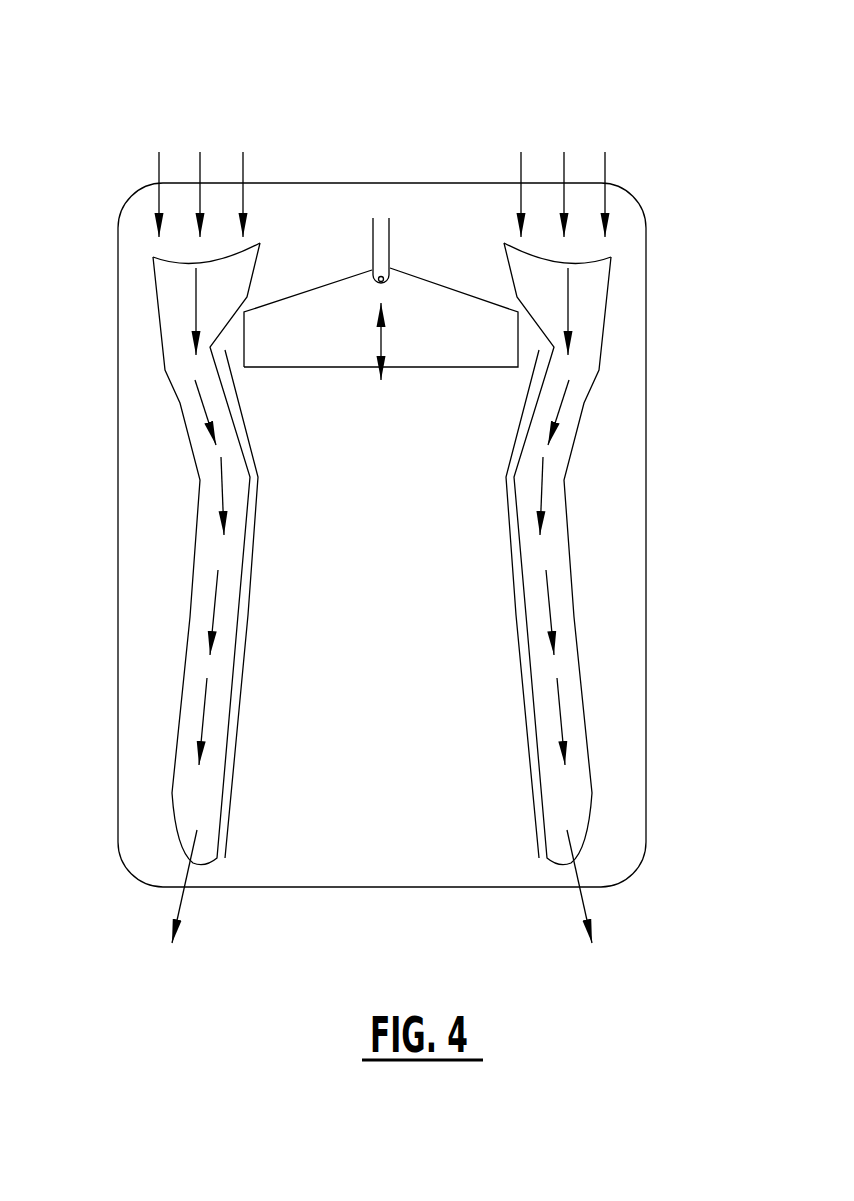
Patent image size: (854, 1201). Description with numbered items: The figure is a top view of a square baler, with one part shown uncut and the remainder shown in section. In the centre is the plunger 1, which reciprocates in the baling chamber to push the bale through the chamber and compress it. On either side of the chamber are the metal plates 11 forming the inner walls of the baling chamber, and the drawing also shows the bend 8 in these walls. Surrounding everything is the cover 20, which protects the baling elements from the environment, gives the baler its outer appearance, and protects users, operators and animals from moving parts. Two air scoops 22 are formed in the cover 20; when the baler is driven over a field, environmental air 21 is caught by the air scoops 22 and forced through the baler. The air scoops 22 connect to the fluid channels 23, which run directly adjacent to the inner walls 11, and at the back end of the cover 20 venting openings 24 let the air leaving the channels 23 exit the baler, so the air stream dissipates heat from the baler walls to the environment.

The plunger 1 is at (381, 299).
The bend 8 is at (503, 482).
The metal plates 11 is at (245, 612).
The cover 20 is at (118, 630).
The environmental air 21 is at (200, 152).
The air scoops 22 is at (389, 517).
The fluid channels 23 is at (187, 408).
The venting openings 24 is at (200, 882).